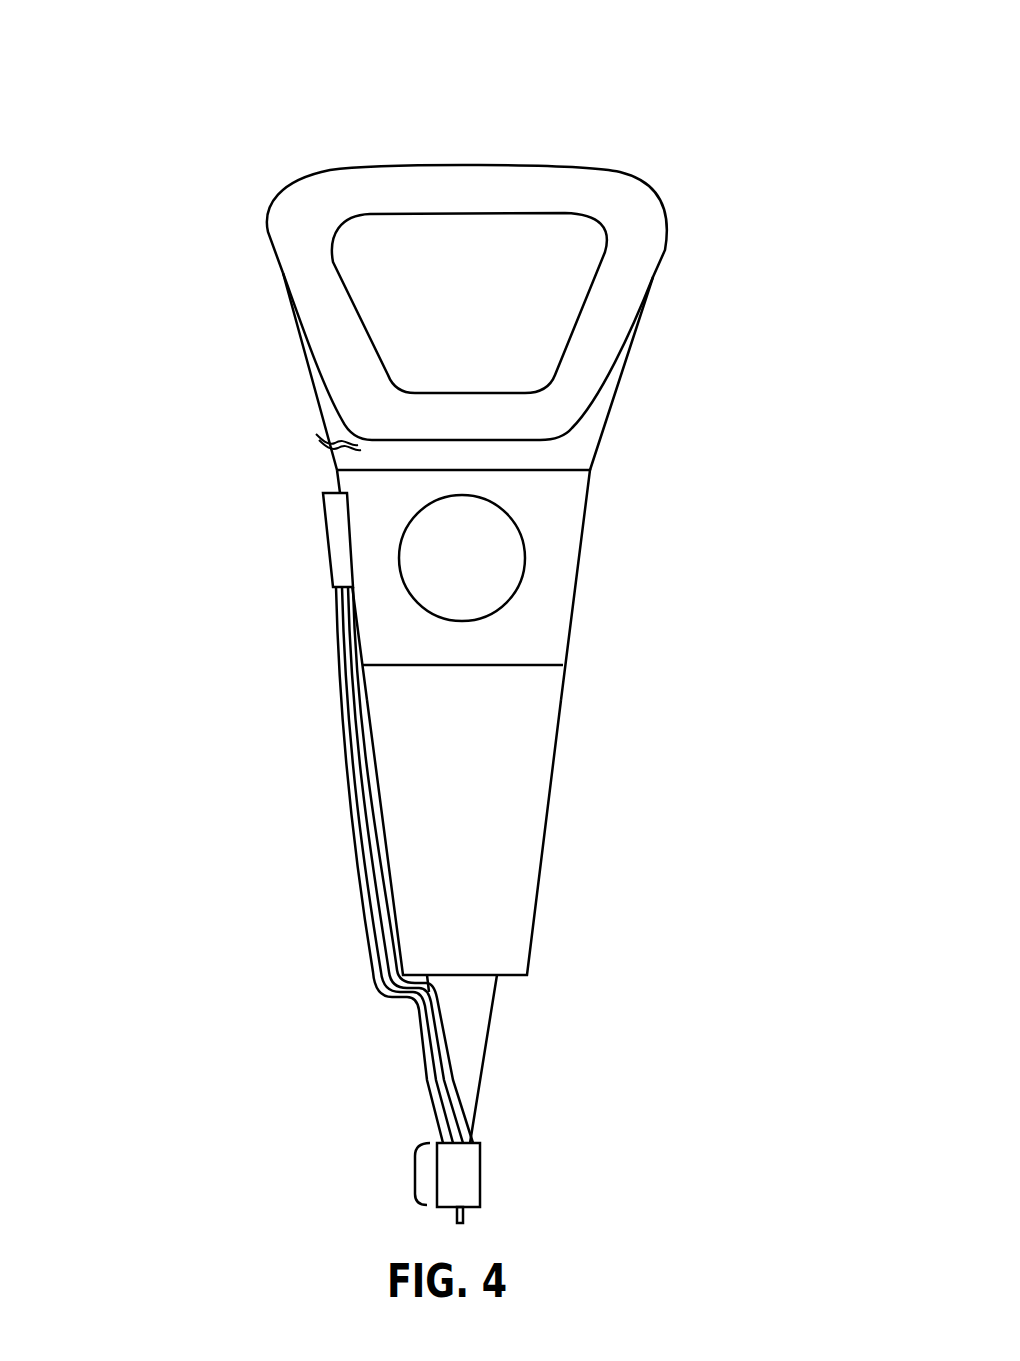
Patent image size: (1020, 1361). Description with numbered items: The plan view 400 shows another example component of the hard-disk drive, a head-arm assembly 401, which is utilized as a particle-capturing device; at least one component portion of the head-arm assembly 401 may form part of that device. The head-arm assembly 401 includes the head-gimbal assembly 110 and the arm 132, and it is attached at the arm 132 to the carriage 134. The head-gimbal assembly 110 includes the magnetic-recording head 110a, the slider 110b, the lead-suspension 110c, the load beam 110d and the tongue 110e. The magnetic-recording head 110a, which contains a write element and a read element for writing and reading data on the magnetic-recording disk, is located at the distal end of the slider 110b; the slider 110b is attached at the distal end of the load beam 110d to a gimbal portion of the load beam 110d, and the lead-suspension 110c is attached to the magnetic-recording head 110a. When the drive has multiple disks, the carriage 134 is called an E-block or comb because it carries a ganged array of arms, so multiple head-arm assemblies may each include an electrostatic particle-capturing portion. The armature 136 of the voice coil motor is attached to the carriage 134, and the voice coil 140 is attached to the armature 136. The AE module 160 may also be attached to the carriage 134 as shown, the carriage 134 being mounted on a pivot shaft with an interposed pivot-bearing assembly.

The plan view 400 is at (218, 107).
The head-arm assembly (HAA) 401 is at (645, 170).
The voice coil 140 is at (320, 332).
The armature 136 is at (333, 408).
The carriage 134 is at (533, 623).
The arm 132 is at (455, 763).
The AE module 160 is at (341, 552).
The head-gimbal assembly (HGA) 110 is at (299, 905).
The magnetic-recording head 110a is at (448, 1197).
The slider 110b is at (406, 1151).
The lead-suspension 110c is at (430, 1062).
The load beam 110d is at (458, 1018).
The tongue 110e is at (340, 1203).